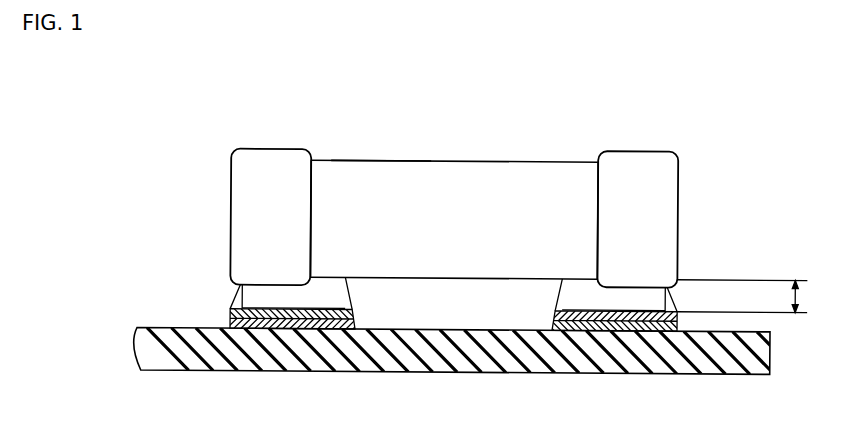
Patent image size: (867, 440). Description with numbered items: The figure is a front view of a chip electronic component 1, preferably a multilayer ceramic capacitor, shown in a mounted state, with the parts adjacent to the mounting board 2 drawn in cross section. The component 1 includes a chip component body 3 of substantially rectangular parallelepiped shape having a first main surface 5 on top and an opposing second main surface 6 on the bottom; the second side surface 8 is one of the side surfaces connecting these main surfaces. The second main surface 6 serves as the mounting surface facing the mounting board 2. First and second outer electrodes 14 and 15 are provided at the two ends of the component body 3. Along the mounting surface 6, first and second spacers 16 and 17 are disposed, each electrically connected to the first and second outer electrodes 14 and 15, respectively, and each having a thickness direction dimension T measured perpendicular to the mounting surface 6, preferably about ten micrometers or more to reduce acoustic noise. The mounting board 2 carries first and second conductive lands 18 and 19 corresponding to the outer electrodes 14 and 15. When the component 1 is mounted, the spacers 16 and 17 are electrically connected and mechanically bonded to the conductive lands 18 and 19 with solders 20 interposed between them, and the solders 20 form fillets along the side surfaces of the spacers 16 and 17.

The chip electronic component 1 is at (538, 132).
The mounting board 2 is at (770, 349).
The chip component body 3 is at (453, 252).
The first main surface 5 is at (485, 158).
The second main surface 6 is at (410, 276).
The second side surface 8 is at (383, 171).
The first outer electrode 14 is at (268, 154).
The second outer electrode 15 is at (628, 155).
The first spacer 16 is at (326, 279).
The second spacer 17 is at (573, 282).
The first conductive land 18 is at (230, 322).
The second conductive land 19 is at (642, 324).
The solder 20 is at (237, 311).
The thickness direction dimension T is at (798, 287).